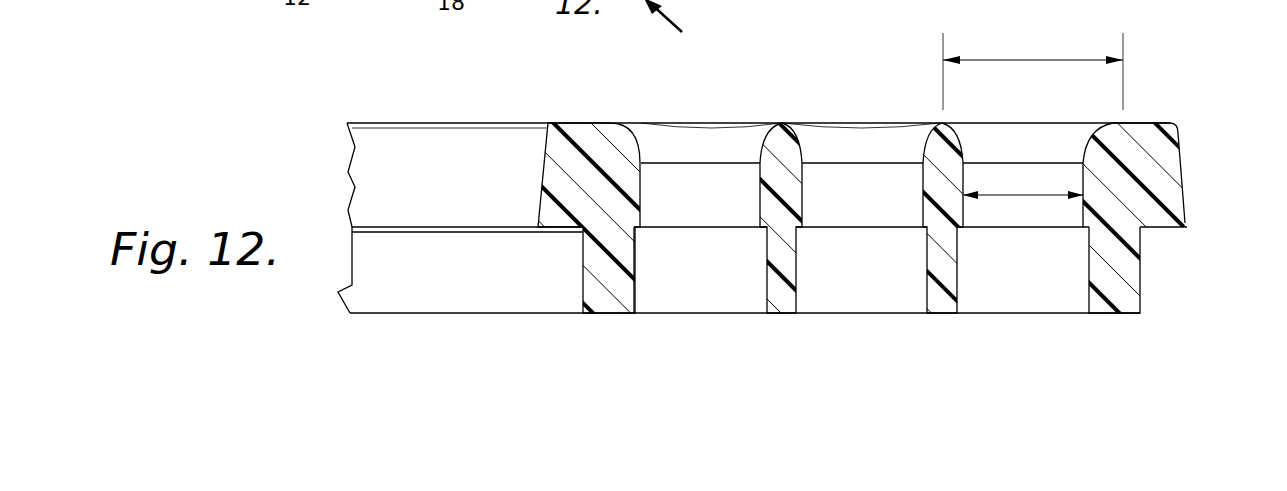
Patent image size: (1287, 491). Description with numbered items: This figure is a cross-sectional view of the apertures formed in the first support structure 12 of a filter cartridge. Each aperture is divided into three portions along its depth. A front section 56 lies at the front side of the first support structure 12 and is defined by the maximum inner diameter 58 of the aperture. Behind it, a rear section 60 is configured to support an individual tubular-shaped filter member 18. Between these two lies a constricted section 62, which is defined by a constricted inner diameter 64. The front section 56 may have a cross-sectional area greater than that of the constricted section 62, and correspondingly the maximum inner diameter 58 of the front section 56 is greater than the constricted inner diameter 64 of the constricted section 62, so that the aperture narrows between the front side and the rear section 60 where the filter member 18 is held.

The first support structure 12 is at (1185, 222).
The tubular-shaped filter member 18 is at (1083, 314).
The front section 56 is at (1027, 147).
The maximum inner diameter 58 is at (1008, 60).
The rear section 60 is at (1062, 227).
The constricted section 62 is at (1059, 177).
The constricted inner diameter 64 is at (1012, 199).